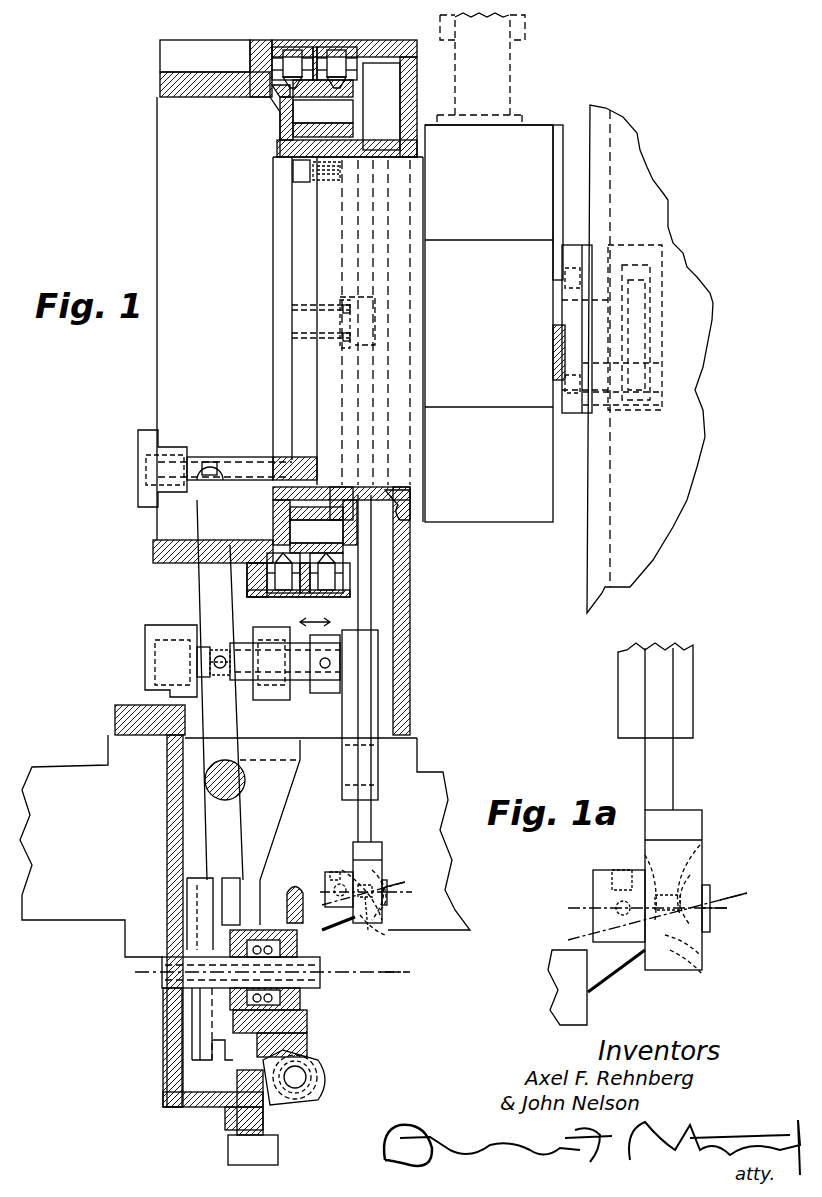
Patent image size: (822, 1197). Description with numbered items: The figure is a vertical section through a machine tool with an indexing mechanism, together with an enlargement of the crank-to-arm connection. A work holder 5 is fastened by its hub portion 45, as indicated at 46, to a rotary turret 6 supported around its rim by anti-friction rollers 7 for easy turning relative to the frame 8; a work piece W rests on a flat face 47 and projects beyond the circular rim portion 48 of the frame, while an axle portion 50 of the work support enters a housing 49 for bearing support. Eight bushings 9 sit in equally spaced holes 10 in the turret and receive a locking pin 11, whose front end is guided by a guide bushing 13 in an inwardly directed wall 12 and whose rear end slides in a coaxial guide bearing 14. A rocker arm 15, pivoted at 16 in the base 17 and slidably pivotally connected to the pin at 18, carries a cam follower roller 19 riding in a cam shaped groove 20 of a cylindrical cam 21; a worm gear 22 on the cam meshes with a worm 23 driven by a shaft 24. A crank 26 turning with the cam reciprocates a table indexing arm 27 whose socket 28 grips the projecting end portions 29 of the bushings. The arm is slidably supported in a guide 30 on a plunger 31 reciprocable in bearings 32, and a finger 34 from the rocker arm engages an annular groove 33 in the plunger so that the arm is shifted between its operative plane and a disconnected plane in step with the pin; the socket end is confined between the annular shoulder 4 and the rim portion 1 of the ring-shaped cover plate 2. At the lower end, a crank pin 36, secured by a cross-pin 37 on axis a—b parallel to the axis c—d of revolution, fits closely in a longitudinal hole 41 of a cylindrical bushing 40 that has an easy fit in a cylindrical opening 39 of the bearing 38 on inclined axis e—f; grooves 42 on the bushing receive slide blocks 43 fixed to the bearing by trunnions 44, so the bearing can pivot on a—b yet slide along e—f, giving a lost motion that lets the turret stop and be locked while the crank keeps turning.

In FIG. 1, the rim portion 1 is at (395, 513).
In FIG. 1, the ring-shaped cover plate 2 is at (350, 25).
In FIG. 1, the annular shoulder 4 is at (355, 520).
In FIG. 1, the work holder 5 is at (523, 135).
In FIG. 1, the turret 6 is at (272, 100).
In FIG. 1, the anti-friction rollers 7 is at (270, 90).
In FIG. 1, the frame 8 is at (205, 83).
In FIG. 1, the bushings 9 is at (355, 112).
In FIG. 1, the holes 10 is at (290, 130).
In FIG. 1, the locking pin 11 is at (255, 447).
In FIG. 1, the wall 12 is at (278, 118).
In FIG. 1, the guide bushing 13 is at (290, 458).
In FIG. 1, the guide bearing 14 is at (172, 452).
In FIG. 1, the rocker arm 15 is at (212, 593).
In FIG. 1, the pivot 16 is at (210, 782).
In FIG. 1, the base 17 is at (105, 755).
In FIG. 1, the slidable pivotal connection 18 is at (208, 476).
In FIG. 1, the cam follower roller 19 is at (162, 985).
In FIG. 1, the cam shaped groove 20 is at (200, 1022).
In FIG. 1, the cylindrical cam 21 is at (193, 895).
In FIG. 1, the worm gear 22 is at (293, 885).
In FIG. 1, the worm 23 is at (312, 1075).
In FIG. 1, the shaft 24 is at (306, 1082).
In FIG. 1, the crank 26 is at (335, 925).
In FIG. 1A, the crank 26 is at (603, 975).
In FIG. 1, the table indexing arm 27 is at (372, 562).
In FIG. 1A, the table indexing arm 27 is at (668, 775).
In FIG. 1, the socket 28 is at (345, 298).
In FIG. 1, the projecting end portions 29 is at (345, 172).
In FIG. 1, the supporting guide 30 is at (372, 683).
In FIG. 1A, the supporting guide 30 is at (690, 722).
In FIG. 1, the plunger 31 is at (318, 695).
In FIG. 1, the bearings 32 is at (155, 685).
In FIG. 1, the annular groove 33 is at (219, 648).
In FIG. 1, the finger 34 is at (216, 672).
In FIG. 1, the crank pin 36 is at (387, 897).
In FIG. 1A, the crank pin 36 is at (710, 925).
In FIG. 1, the cross-pin 37 is at (340, 877).
In FIG. 1A, the cross-pin 37 is at (618, 900).
In FIG. 1, the bearing 38 is at (380, 846).
In FIG. 1A, the bearing 38 is at (675, 852).
In FIG. 1, the cylindrical opening 39 is at (382, 862).
In FIG. 1A, the cylindrical opening 39 is at (704, 970).
In FIG. 1, the cylindrical bushing 40 is at (387, 931).
In FIG. 1A, the cylindrical bushing 40 is at (700, 880).
In FIG. 1, the longitudinal hole 41 is at (388, 873).
In FIG. 1A, the longitudinal hole 41 is at (701, 952).
In FIG. 1, the grooves 42 is at (387, 918).
In FIG. 1A, the grooves 42 is at (648, 852).
In FIG. 1, the slide blocks 43 is at (358, 878).
In FIG. 1A, the slide blocks 43 is at (655, 925).
In FIG. 1, the trunnions 44 is at (360, 919).
In FIG. 1A, the trunnions 44 is at (702, 855).
In FIG. 1, the hub portion 45 is at (425, 185).
In FIG. 1, the fastening 46 is at (290, 172).
In FIG. 1, the flat faces 47 is at (540, 128).
In FIG. 1, the rim portion 48 is at (280, 47).
In FIG. 1, the housing 49 is at (612, 543).
In FIG. 1, the axle portion 50 is at (556, 350).
In FIG. 1, the work piece W is at (508, 72).
In FIG. 1, the axis a—b end point a is at (347, 887).
In FIG. 1A, the axis a—b end point a is at (639, 907).
In FIG. 1, the axis a—b end point b is at (404, 891).
In FIG. 1A, the axis a—b end point b is at (719, 909).
In FIG. 1, the axis c—d end point c is at (270, 972).
In FIG. 1, the axis c—d end point d is at (395, 973).
In FIG. 1, the axis e—f end point e is at (356, 898).
In FIG. 1A, the axis e—f end point e is at (650, 919).
In FIG. 1, the axis e—f end point f is at (398, 878).
In FIG. 1A, the axis e—f end point f is at (735, 888).